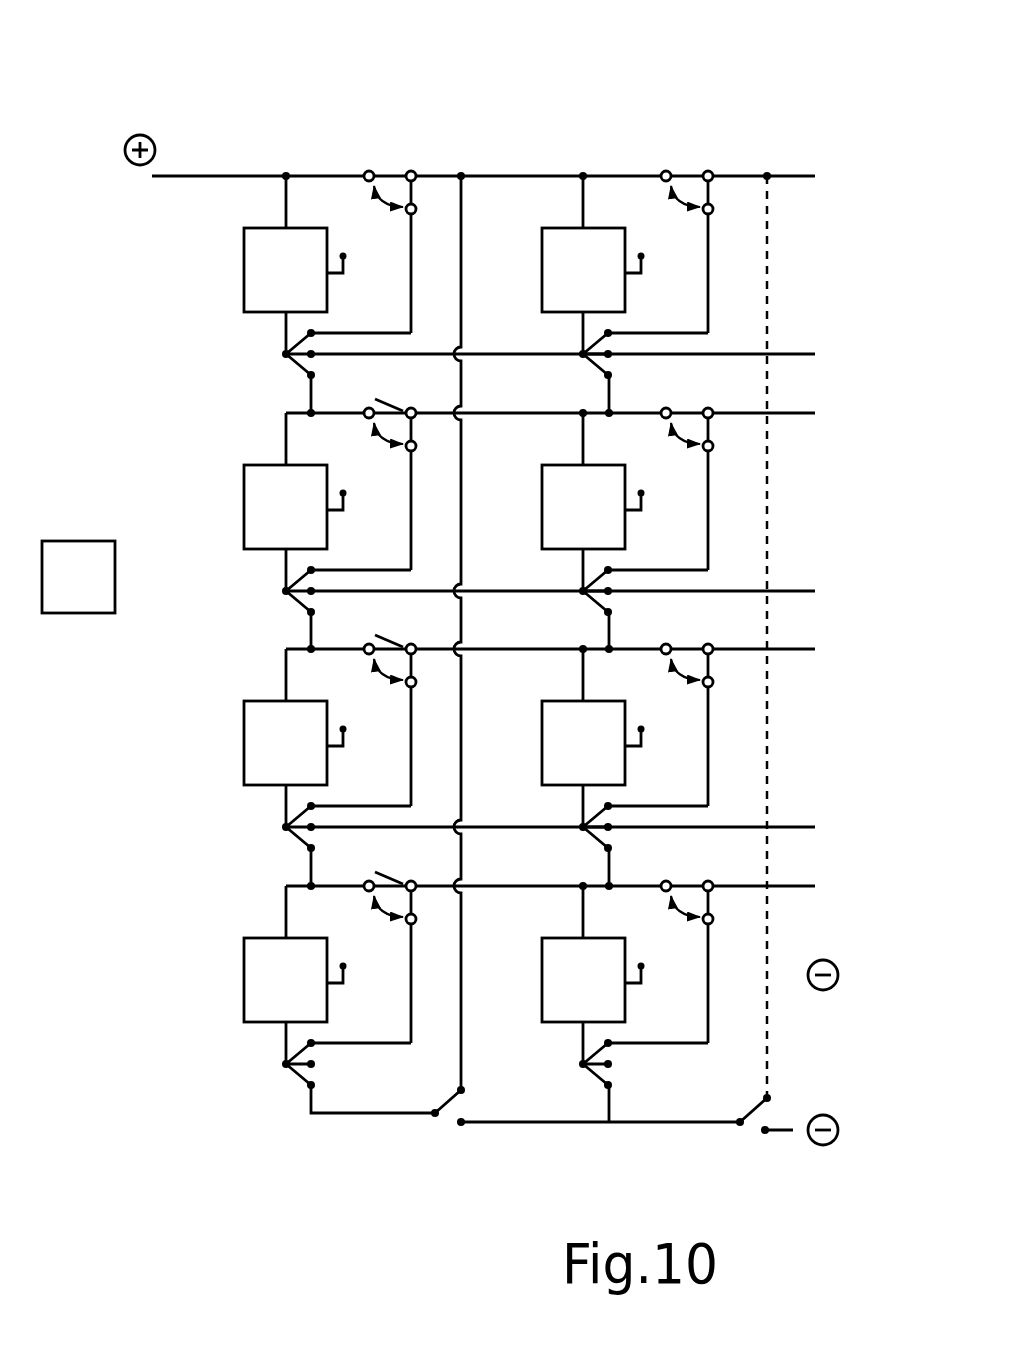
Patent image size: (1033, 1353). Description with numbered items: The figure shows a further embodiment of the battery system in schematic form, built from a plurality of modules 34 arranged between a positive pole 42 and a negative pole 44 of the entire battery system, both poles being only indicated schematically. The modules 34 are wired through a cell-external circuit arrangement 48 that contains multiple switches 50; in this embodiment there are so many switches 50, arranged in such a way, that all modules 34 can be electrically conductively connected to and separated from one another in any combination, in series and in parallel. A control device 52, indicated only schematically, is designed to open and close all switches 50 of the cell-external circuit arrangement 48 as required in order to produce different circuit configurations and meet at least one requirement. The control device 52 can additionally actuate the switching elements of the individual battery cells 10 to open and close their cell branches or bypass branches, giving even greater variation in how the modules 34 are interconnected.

The battery cell 10 is at (793, 107).
The module 34 is at (602, 998).
The positive pole 42 is at (143, 127).
The negative pole 44 is at (833, 1155).
The cell-external circuit arrangement 48 is at (810, 293).
The switch 50 is at (528, 613).
The control device 52 is at (96, 593).